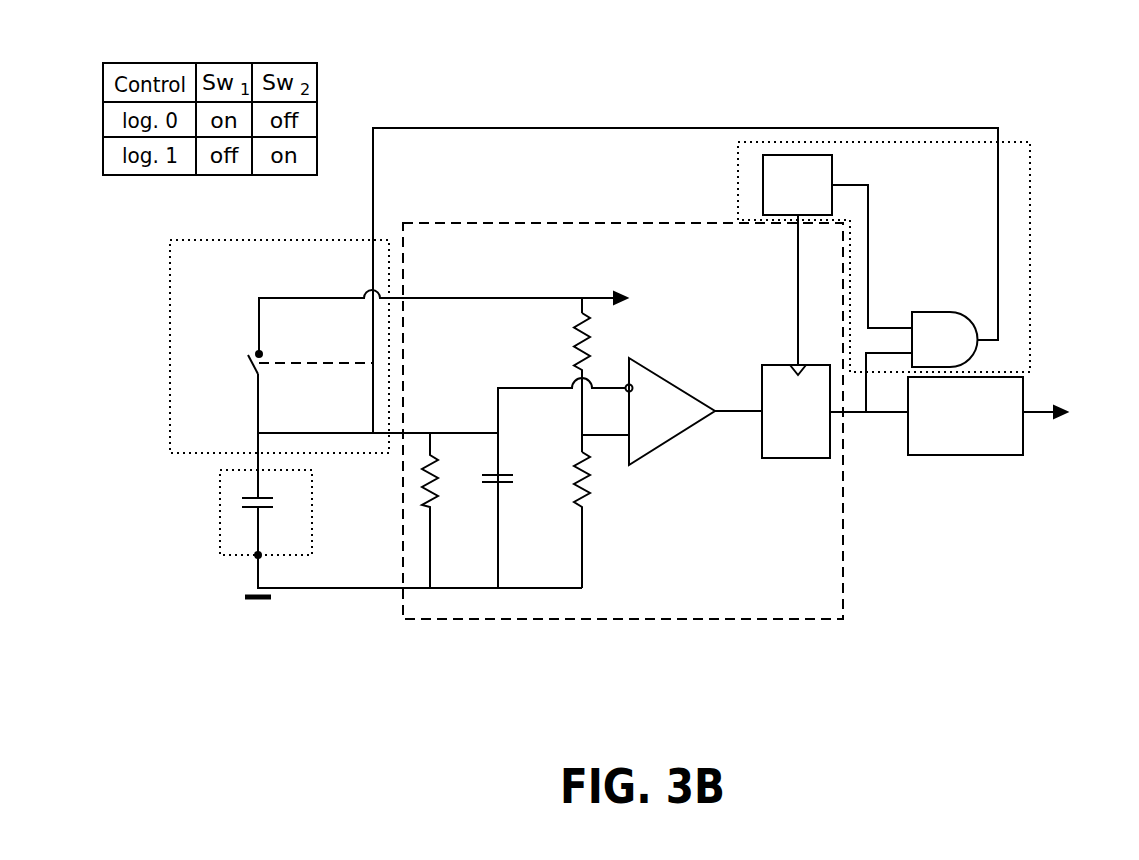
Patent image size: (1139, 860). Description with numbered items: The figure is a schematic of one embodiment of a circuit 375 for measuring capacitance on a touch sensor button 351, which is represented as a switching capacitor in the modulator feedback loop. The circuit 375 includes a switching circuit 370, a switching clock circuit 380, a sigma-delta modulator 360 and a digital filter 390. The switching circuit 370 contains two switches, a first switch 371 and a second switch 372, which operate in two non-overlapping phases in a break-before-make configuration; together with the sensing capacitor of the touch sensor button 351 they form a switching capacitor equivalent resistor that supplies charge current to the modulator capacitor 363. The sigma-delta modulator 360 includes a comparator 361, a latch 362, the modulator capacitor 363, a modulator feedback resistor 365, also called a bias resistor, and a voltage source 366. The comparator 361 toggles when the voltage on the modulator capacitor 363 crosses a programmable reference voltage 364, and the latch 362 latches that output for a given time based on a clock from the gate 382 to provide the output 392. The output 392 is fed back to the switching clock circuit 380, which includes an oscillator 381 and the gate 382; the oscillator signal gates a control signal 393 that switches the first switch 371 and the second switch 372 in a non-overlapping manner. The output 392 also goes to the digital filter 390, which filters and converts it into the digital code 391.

The touch sensor button 351 is at (220, 507).
The sigma-delta modulator 360 is at (641, 272).
The comparator 361 is at (680, 432).
The latch 362 is at (776, 422).
The modulator capacitor 363 is at (500, 483).
The reference voltage 364 is at (613, 435).
The modulator feedback resistor 365 is at (442, 453).
The voltage source 366 is at (655, 300).
The switching circuit 370 is at (302, 285).
The switch Sw1 371 is at (253, 366).
The switch Sw2 372 is at (362, 426).
The circuit 375 is at (952, 74).
The switching clock circuit 380 is at (926, 192).
The oscillator 381 is at (779, 212).
The gate 382 is at (944, 312).
The digital filter 390 is at (965, 415).
The digital code 391 is at (1037, 405).
The output 392 is at (880, 415).
The control signal 393 is at (477, 128).